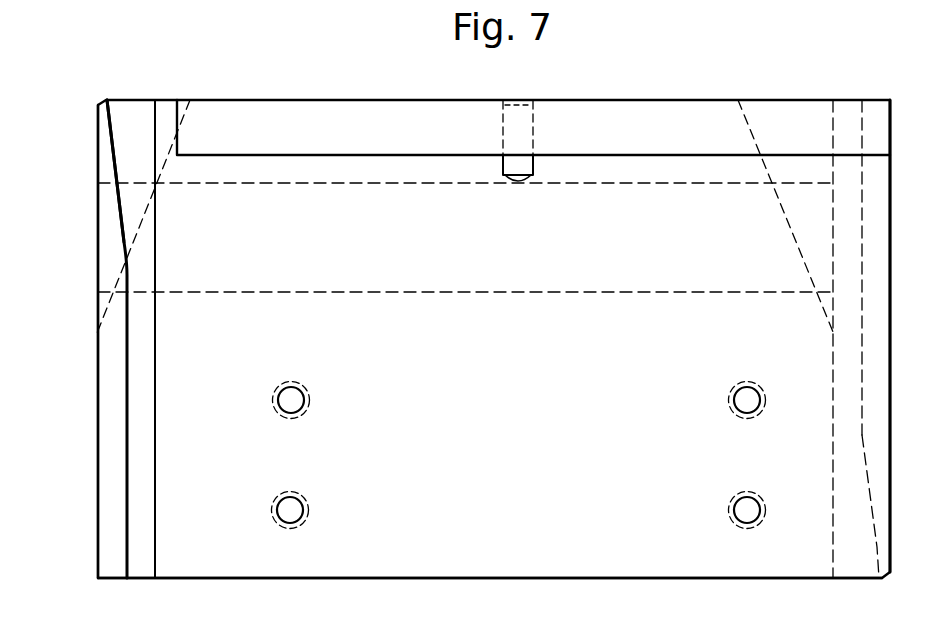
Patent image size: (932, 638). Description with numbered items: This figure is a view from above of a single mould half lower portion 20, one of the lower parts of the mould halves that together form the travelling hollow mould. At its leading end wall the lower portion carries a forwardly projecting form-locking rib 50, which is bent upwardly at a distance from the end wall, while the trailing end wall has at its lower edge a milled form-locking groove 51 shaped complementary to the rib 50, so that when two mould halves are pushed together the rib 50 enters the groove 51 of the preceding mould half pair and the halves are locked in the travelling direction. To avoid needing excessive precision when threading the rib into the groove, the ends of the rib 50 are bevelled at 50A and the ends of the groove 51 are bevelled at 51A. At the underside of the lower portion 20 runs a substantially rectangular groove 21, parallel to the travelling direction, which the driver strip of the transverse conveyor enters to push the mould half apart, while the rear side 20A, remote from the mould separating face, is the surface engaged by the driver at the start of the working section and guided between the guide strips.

The mould half lower portion 20 is at (612, 100).
The rear side of the mould half lower portion 20A is at (465, 580).
The groove 21 is at (418, 286).
The form-locking rib 50 is at (133, 385).
The bevelled end of the rib 50A is at (120, 128).
The form-locking groove 51 is at (857, 337).
The bevelled end of the groove 51A is at (876, 562).